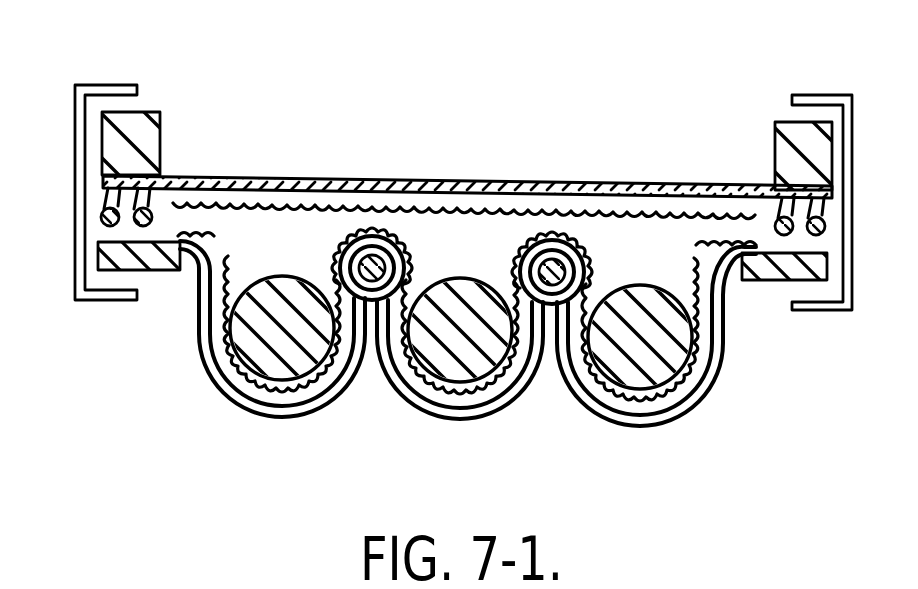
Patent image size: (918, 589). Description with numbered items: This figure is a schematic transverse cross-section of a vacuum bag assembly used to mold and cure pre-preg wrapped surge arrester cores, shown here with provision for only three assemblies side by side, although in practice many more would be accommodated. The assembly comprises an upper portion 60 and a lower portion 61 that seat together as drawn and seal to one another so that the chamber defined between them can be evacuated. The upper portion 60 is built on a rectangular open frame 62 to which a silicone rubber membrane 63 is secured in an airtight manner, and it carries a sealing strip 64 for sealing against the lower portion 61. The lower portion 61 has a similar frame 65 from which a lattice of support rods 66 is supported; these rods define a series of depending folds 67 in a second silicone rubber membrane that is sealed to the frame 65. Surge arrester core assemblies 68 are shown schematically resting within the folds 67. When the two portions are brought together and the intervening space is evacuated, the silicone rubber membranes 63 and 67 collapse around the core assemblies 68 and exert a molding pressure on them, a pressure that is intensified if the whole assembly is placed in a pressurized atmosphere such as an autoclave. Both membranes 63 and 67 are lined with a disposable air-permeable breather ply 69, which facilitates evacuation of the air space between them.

The upper portion 60 is at (190, 152).
The lower portion 61 is at (165, 375).
The rectangular open frame 62 is at (150, 108).
The silicone rubber membrane 63 is at (350, 177).
The sealing strip 64 is at (106, 200).
The frame 65 is at (150, 271).
The support rods 66 is at (402, 254).
The depending folds 67 is at (300, 415).
The surge arrester core assemblies 68 is at (272, 358).
The breather ply 69 is at (643, 215).